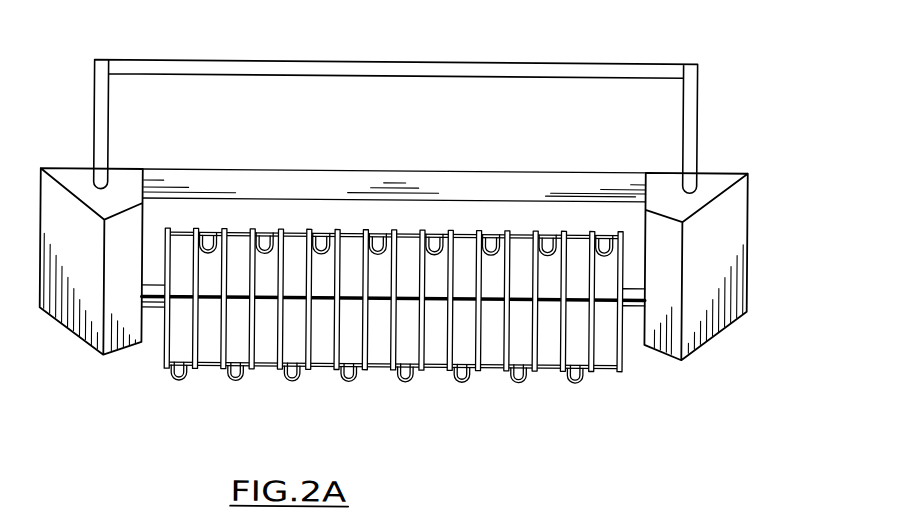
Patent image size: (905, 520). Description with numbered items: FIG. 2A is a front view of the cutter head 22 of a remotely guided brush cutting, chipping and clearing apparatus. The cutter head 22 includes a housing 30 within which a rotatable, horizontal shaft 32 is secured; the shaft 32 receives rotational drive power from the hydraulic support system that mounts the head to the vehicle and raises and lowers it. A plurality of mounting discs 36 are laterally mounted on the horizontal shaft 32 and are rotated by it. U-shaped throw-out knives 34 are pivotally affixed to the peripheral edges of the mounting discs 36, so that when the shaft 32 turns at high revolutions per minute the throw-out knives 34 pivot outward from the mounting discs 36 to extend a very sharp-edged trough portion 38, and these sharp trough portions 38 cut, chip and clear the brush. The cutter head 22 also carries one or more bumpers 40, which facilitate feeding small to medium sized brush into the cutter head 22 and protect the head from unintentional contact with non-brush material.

The cutter head 22 is at (429, 261).
The housing 30 is at (703, 292).
The horizontal shaft 32 is at (630, 307).
The throw-out knives 34 is at (323, 237).
The mounting discs 36 is at (562, 379).
The trough portion 38 is at (353, 380).
The bumpers 40 is at (689, 68).